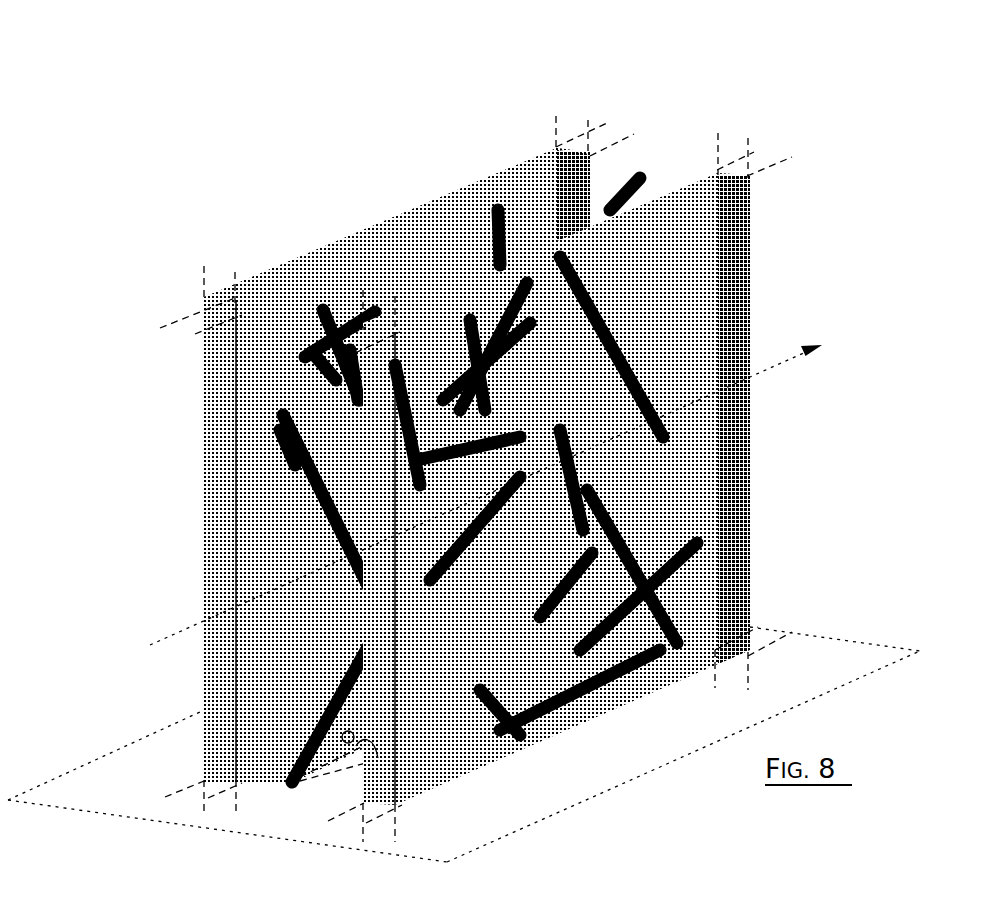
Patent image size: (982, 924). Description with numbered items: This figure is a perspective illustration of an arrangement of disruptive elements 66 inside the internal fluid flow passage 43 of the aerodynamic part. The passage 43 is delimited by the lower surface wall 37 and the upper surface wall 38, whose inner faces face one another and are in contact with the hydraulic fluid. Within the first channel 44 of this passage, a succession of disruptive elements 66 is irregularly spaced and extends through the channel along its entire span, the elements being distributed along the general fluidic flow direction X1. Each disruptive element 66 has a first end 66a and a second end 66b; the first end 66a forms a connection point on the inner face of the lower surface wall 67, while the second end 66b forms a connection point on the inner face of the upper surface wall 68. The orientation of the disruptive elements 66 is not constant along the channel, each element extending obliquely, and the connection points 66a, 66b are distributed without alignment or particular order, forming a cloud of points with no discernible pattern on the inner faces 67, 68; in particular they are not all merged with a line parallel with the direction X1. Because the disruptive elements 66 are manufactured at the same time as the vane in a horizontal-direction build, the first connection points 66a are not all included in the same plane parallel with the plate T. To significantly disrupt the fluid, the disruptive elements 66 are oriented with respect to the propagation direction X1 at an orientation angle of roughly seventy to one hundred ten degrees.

The lower surface wall 37 is at (207, 685).
The upper surface wall 38 is at (384, 782).
The internal fluid flow passage 43 is at (178, 113).
The first channel 44 is at (694, 116).
The disruptive elements 66 is at (603, 210).
The first end 66a is at (292, 384).
The second end 66b is at (596, 488).
The inner face of the lower surface wall 67 is at (274, 350).
The inner face of the upper surface wall 68 is at (680, 189).
The fluidic flow direction X1 is at (492, 479).
The plate T is at (112, 797).